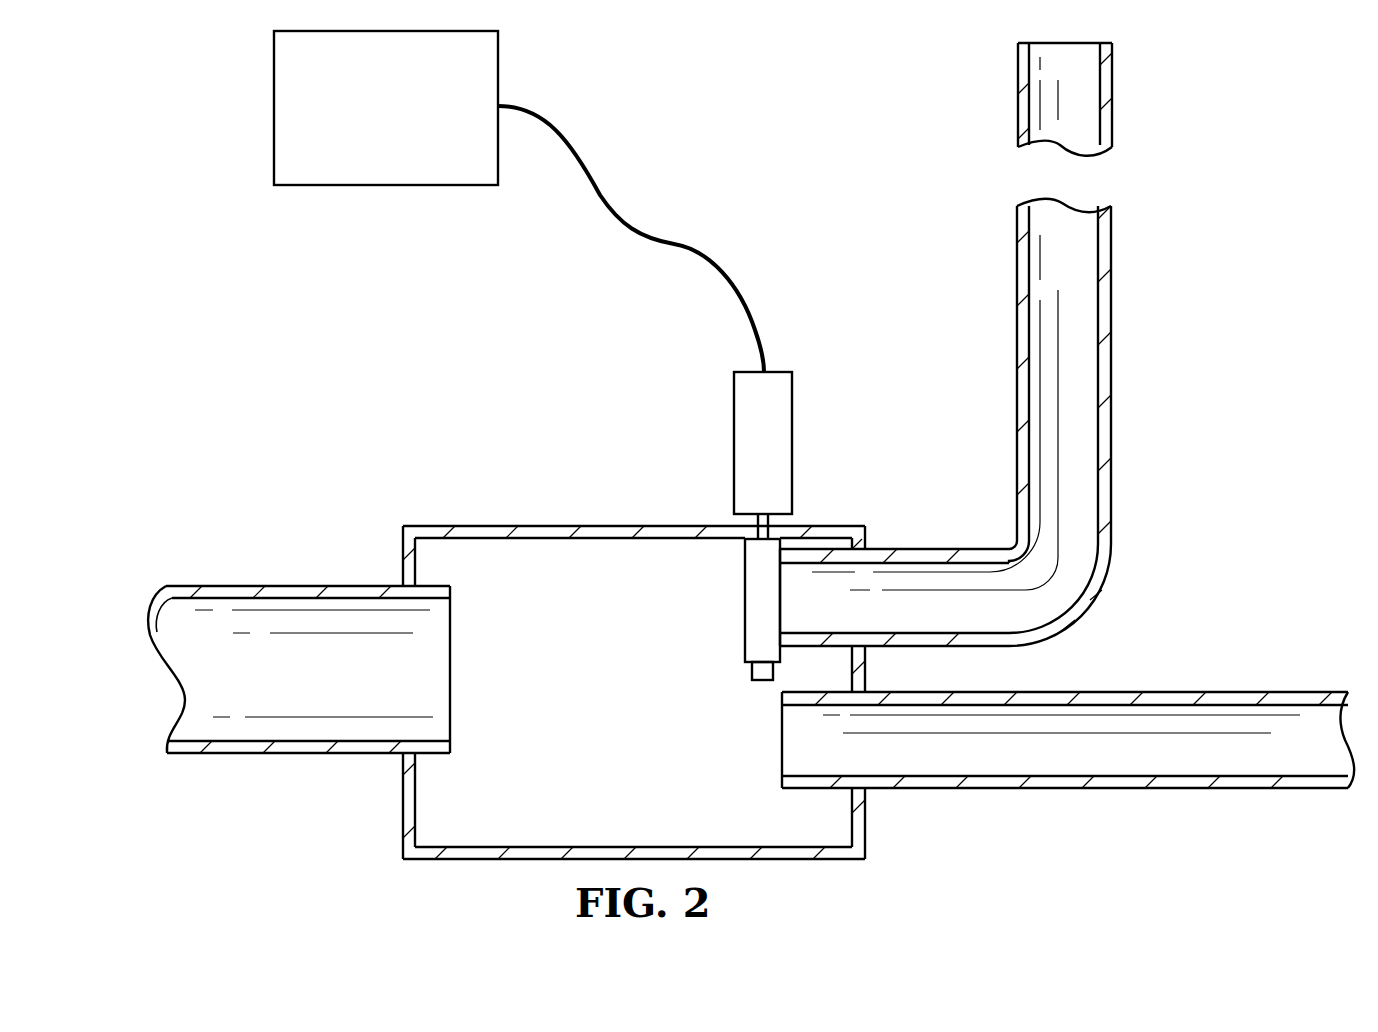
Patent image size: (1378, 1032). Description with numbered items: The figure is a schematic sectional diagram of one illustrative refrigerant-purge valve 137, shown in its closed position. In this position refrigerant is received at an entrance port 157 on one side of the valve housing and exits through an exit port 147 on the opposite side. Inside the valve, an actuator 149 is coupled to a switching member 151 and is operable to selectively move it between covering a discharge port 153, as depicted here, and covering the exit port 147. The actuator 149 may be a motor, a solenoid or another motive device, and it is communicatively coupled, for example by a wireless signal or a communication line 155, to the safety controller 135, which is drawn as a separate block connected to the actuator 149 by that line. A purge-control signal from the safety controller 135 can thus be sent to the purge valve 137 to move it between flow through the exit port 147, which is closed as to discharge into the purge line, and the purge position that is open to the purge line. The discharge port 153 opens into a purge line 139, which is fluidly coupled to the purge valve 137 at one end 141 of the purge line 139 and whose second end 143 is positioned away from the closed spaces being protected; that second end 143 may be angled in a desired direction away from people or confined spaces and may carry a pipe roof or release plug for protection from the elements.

The safety controller 135 is at (384, 187).
The refrigerant-purge valve 137 is at (483, 518).
The purge line 139 is at (1112, 318).
The one end of the purge line 141 is at (937, 549).
The second end of the purge line 143 is at (1112, 95).
The exit port 147 is at (867, 792).
The actuator 149 is at (792, 388).
The switching member 151 is at (745, 598).
The discharge port 153 is at (865, 547).
The communication line 155 is at (674, 244).
The entrance port 157 is at (398, 755).